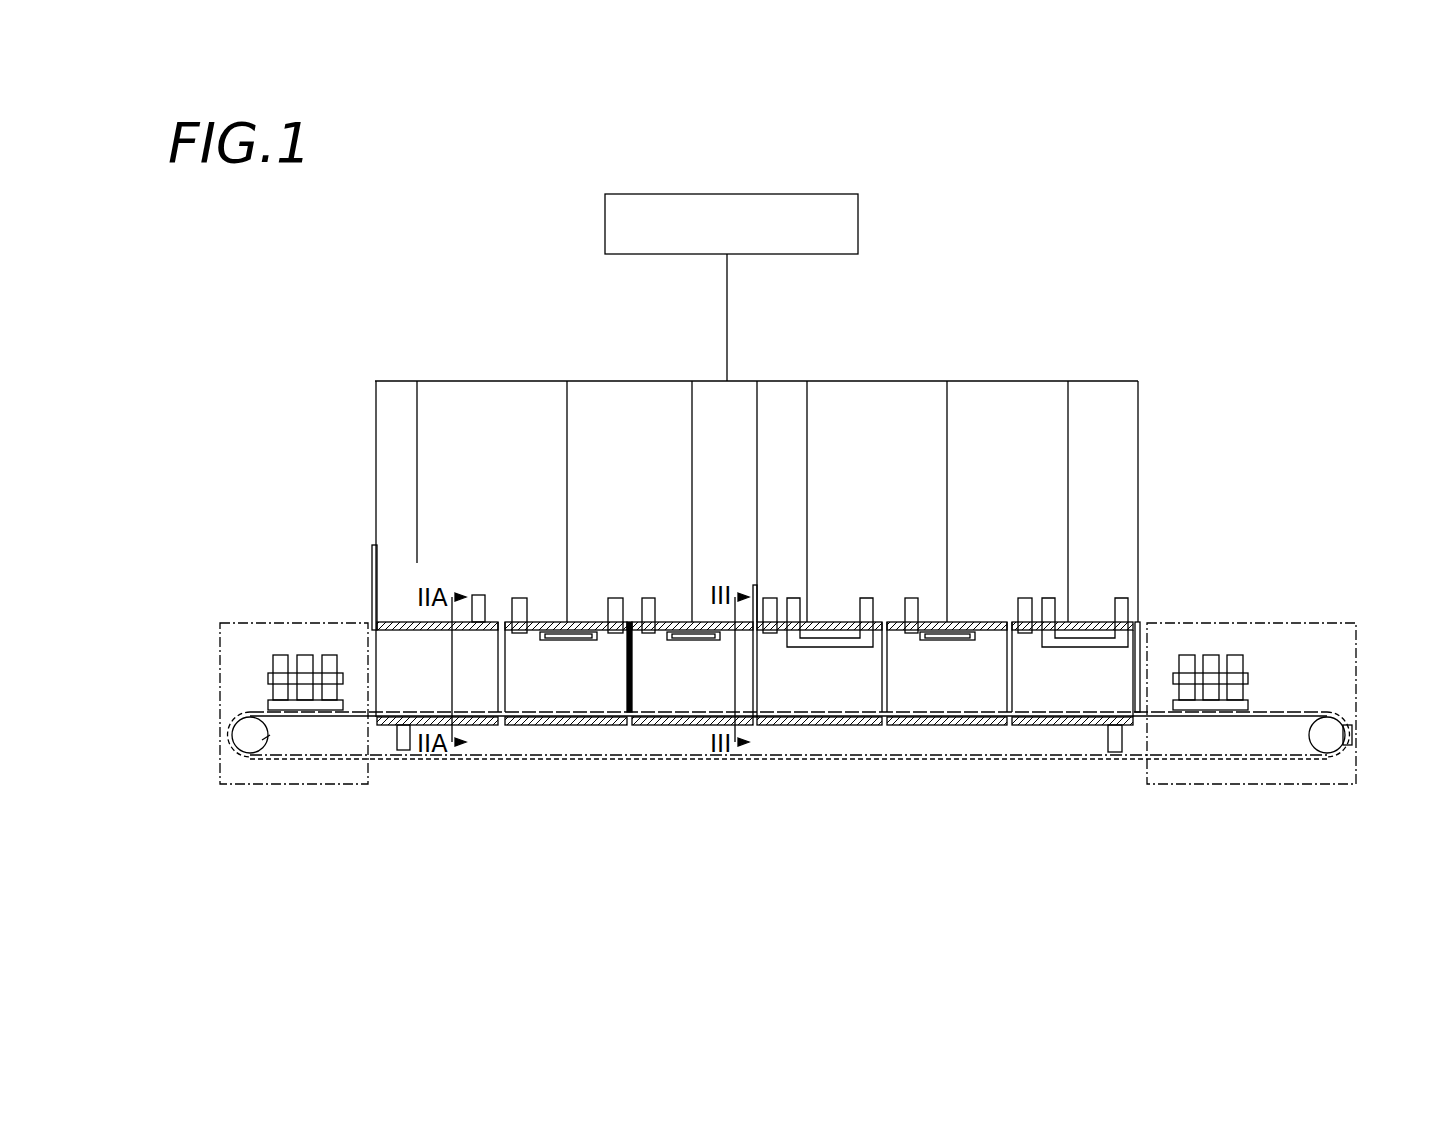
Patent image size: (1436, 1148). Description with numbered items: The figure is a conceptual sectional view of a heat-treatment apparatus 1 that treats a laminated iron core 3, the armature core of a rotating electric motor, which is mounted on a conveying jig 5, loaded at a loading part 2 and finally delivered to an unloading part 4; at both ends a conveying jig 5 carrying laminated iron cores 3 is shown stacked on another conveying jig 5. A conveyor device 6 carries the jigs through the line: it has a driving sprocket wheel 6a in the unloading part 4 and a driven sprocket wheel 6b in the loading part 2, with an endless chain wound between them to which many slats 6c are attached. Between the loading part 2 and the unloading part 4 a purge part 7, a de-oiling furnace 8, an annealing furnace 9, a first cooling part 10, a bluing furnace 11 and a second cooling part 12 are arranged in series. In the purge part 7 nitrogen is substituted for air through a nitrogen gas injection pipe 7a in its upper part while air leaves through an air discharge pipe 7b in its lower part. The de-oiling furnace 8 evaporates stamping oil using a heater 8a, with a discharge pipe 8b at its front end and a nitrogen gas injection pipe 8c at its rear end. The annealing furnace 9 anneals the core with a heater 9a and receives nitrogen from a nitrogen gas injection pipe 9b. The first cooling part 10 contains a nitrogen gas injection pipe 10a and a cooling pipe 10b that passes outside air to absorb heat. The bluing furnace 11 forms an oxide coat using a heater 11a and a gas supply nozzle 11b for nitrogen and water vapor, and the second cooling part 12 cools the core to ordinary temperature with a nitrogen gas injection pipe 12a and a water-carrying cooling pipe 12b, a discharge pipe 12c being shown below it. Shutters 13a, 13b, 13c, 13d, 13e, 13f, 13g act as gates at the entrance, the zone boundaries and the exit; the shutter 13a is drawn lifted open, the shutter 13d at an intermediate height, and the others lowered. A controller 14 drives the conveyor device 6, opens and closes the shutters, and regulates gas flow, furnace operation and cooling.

The heat-treatment apparatus 1 is at (392, 346).
The loading part 2 is at (220, 640).
The laminated iron core 3 is at (282, 662).
The unloading part 4 is at (1356, 640).
The conveying jig 5 is at (318, 676).
The conveyor device 6 is at (500, 775).
The driving sprocket wheel 6a is at (1330, 738).
The driven sprocket wheel 6b is at (242, 742).
The slat 6c is at (340, 716).
The purge part 7 is at (428, 695).
The nitrogen gas injection pipe 7a is at (480, 605).
The air discharge pipe 7b is at (402, 742).
The de-oiling furnace 8 is at (566, 585).
The heater 8a is at (578, 630).
The discharge pipe 8b is at (522, 612).
The nitrogen gas injection pipe 8c is at (612, 610).
The annealing furnace 9 is at (692, 585).
The heater 9a is at (697, 630).
The nitrogen gas injection pipe 9b is at (648, 612).
The first cooling part 10 is at (823, 520).
The nitrogen gas injection pipe 10a is at (768, 618).
The cooling pipe 10b is at (870, 577).
The bluing furnace 11 is at (943, 523).
The heater 11a is at (957, 617).
The gas supply nozzle 11b is at (910, 612).
The second cooling part 12 is at (1072, 590).
The nitrogen gas injection pipe 12a is at (1030, 605).
The cooling pipe 12b is at (1120, 612).
The discharge pipe 12c is at (1113, 743).
The shutter 13a is at (373, 555).
The shutter 13b is at (497, 678).
The shutter 13c is at (633, 685).
The shutter 13d is at (757, 665).
The shutter 13e is at (882, 683).
The shutter 13f is at (1008, 688).
The shutter 13g is at (1140, 620).
The controller 14 is at (850, 240).